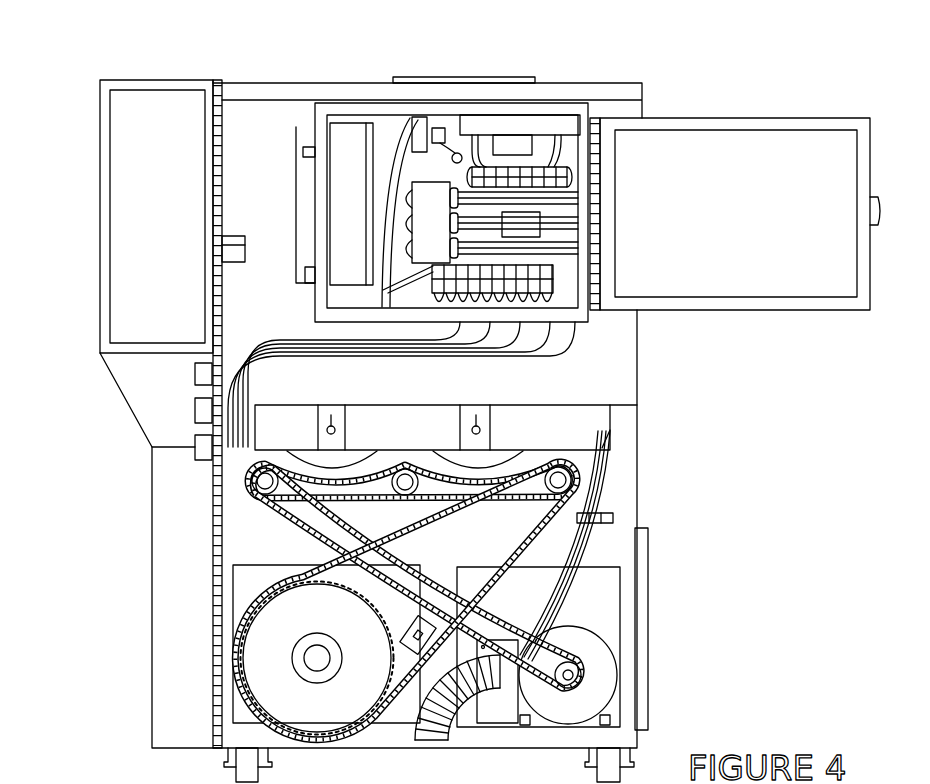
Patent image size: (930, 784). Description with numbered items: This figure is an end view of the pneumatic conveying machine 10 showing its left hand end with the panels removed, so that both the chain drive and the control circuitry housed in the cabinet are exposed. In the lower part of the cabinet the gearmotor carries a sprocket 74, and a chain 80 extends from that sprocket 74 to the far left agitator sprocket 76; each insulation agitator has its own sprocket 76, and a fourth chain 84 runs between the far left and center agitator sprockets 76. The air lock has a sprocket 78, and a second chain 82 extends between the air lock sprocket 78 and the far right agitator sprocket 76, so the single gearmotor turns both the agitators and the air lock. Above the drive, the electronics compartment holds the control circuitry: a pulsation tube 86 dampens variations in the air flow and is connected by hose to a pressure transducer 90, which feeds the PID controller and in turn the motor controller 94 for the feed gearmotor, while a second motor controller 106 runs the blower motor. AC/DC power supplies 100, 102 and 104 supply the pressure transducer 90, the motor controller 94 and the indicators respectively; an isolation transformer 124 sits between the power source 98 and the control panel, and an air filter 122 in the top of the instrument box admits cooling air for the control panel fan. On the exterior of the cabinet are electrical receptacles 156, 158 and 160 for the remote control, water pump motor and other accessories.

The pneumatic conveying machine 10 is at (92, 783).
The sprocket 74 is at (600, 648).
The sprocket 76 is at (407, 477).
The sprocket 78 is at (270, 692).
The chain 80 is at (523, 650).
The second chain 82 is at (605, 708).
The fourth chain 84 is at (600, 543).
The pulsation tube 86 is at (213, 258).
The pressure transducer 90 is at (530, 232).
The motor controller 94 is at (338, 151).
The motor controller 106 is at (337, 137).
The power source 98 is at (422, 118).
The AC/DC power supply 100 is at (473, 127).
The AC/DC power supply 102 is at (517, 127).
The AC/DC power supply 104 is at (547, 128).
The air filter 122 is at (422, 76).
The isolation transformer 124 is at (440, 130).
The electrical receptacle 156 is at (195, 374).
The electrical receptacle 158 is at (195, 412).
The electrical receptacle 160 is at (195, 450).